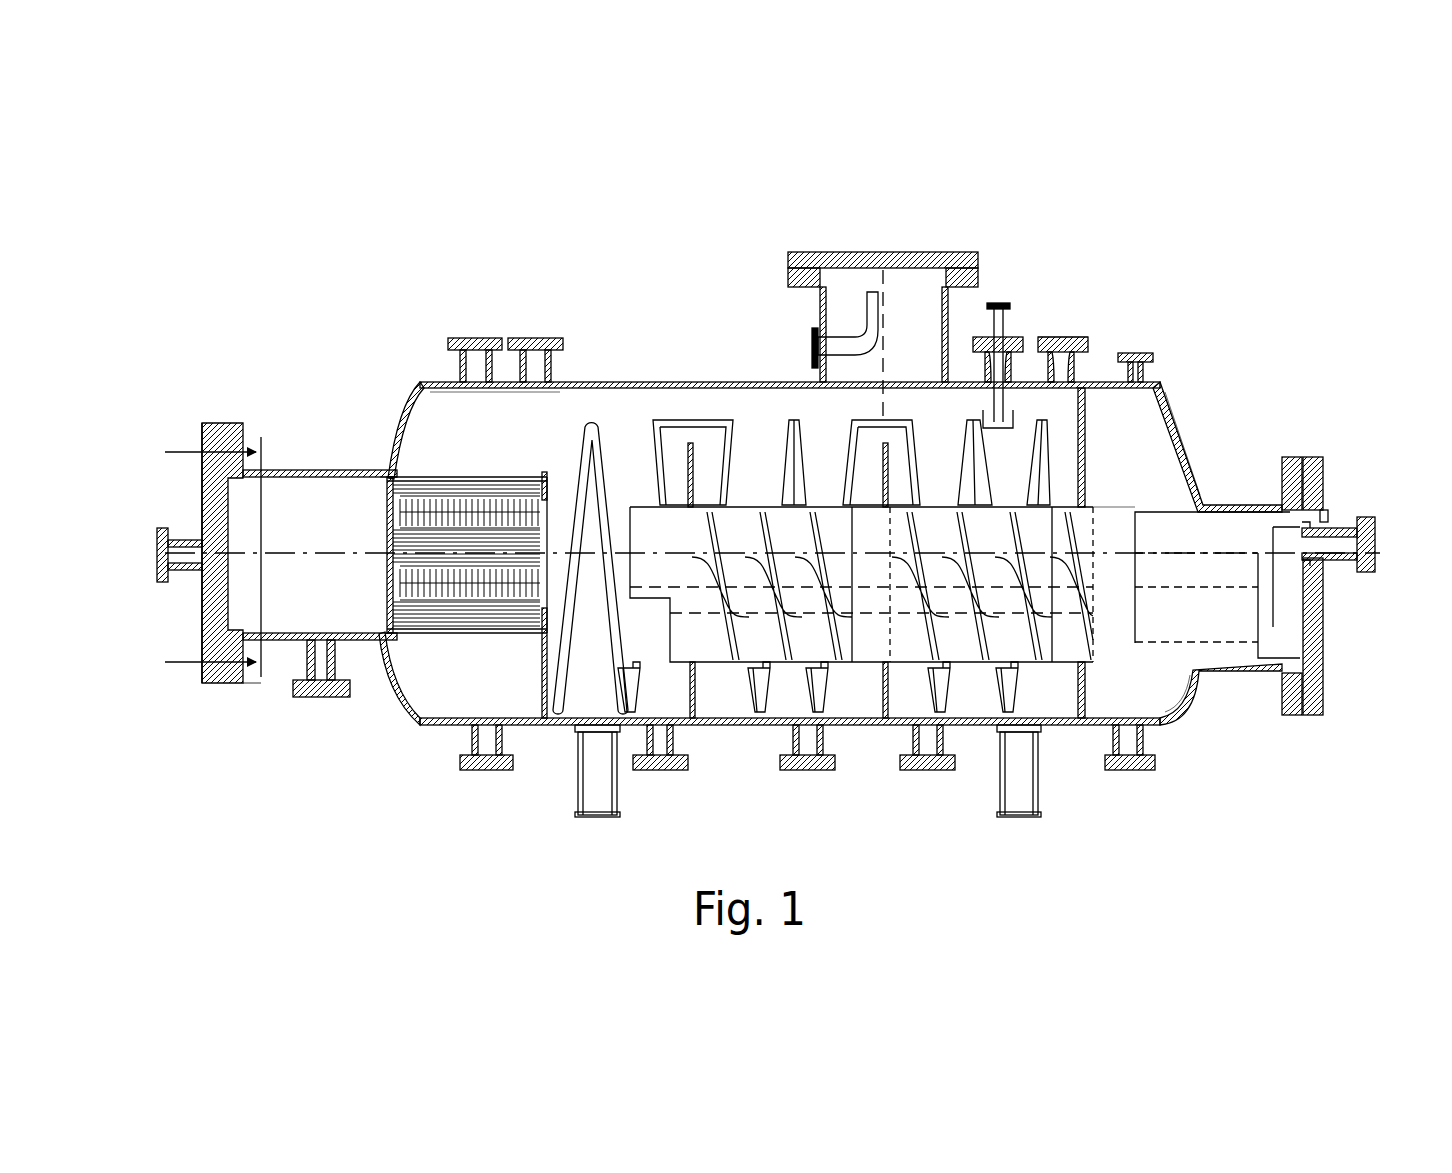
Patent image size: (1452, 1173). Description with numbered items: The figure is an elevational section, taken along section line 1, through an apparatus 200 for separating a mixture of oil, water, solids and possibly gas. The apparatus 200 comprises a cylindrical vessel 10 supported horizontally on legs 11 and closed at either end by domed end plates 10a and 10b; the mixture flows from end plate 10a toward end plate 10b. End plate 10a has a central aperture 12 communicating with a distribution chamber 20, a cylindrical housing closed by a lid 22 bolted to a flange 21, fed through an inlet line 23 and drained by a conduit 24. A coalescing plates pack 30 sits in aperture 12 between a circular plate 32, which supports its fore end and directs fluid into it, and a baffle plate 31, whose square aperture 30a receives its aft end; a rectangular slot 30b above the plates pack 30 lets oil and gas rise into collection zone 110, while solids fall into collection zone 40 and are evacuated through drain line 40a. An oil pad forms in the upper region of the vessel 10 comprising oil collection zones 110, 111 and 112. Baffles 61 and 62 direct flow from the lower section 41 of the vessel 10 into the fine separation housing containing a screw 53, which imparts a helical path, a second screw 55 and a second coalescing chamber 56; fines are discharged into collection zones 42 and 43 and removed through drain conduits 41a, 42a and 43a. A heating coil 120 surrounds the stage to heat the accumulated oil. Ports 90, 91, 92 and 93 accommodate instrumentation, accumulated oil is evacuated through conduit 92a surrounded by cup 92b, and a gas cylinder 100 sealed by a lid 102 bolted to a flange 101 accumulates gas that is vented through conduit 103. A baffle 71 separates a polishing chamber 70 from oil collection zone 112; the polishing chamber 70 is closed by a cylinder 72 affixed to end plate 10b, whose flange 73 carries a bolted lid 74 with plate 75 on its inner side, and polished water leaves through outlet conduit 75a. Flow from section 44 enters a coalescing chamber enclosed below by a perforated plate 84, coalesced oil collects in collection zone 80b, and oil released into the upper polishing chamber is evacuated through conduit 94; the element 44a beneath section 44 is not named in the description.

The apparatus 200 is at (348, 220).
The section line 1 is at (210, 549).
The vessel 10 is at (845, 453).
The domed end plate 10a is at (403, 695).
The domed end plate 10b is at (1178, 398).
The legs 11 is at (600, 797).
The aperture 12 is at (378, 486).
The distribution chamber 20 is at (320, 499).
The flange 21 is at (191, 521).
The lid 22 is at (207, 423).
The inlet line 23 is at (160, 530).
The conduit 24 is at (262, 680).
The coalescing plates pack 30 is at (451, 518).
The square-shaped aperture 30a is at (548, 513).
The rectangular slot 30b is at (392, 478).
The baffle plate 31 is at (560, 470).
The circular plate 32 is at (310, 697).
The collection zone 40 is at (766, 692).
The drain line 40a is at (452, 640).
The lower section 41 is at (755, 700).
The drain conduit 41a is at (694, 700).
The collection zone 42 is at (912, 665).
The drain conduit 42a is at (843, 690).
The collection zone 43 is at (1038, 693).
The drain conduit 43a is at (832, 776).
The section 44 is at (1196, 700).
The rear support leg 44a is at (1150, 735).
The screw 53 is at (594, 425).
The second screw 55 is at (1118, 690).
The second coalescing chamber 56 is at (1080, 545).
The baffle 61 is at (686, 457).
The baffle 62 is at (880, 457).
The polishing chamber 70 is at (1248, 482).
The baffle 71 is at (1084, 400).
The cylinder 72 is at (1218, 528).
The flange 73 is at (1290, 717).
The lid 74 is at (1356, 638).
The plate 75 is at (1362, 533).
The outlet conduit 75a is at (1370, 566).
The collection zone 80b is at (1303, 507).
The perforated plate 84 is at (1258, 605).
The port 90 is at (447, 344).
The port 91 is at (561, 344).
The port 92 is at (1192, 250).
The conduit 92a is at (1000, 352).
The cup 92b is at (1065, 352).
The port 93 is at (1088, 382).
The conduit 94 is at (1152, 353).
The gas cylinder 100 is at (832, 269).
The flange 101 is at (818, 327).
The lid 102 is at (807, 252).
The conduit 103 is at (880, 312).
The oil collection zone 110 is at (465, 440).
The oil collection zone 111 is at (697, 418).
The oil collection zone 112 is at (996, 303).
The heating coil 120 is at (575, 686).